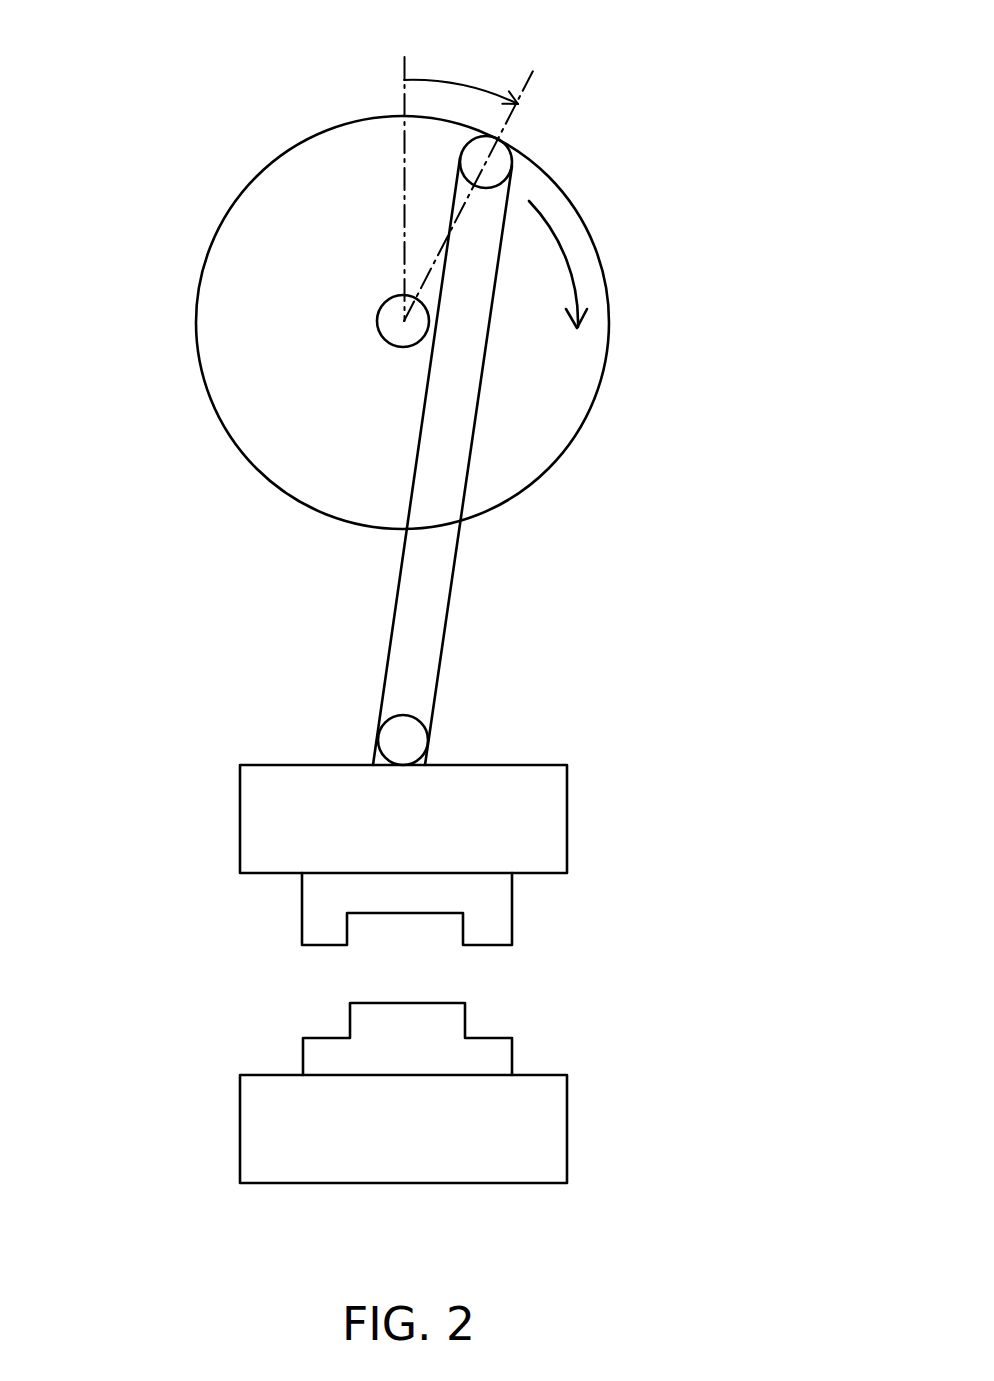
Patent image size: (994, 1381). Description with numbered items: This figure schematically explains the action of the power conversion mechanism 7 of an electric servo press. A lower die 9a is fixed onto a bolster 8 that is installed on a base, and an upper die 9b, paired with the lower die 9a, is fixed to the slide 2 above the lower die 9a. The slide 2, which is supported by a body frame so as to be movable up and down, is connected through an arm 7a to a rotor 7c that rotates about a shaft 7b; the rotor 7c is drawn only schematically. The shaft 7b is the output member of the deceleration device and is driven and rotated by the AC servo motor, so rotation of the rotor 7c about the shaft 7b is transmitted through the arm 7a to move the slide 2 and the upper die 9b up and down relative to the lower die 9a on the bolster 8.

The power conversion mechanism 7 is at (420, 382).
The arm 7a is at (438, 678).
The shaft 7b is at (377, 321).
The rotor 7c is at (255, 472).
The slide 2 is at (567, 820).
The upper die 9b is at (512, 932).
The lower die 9a is at (512, 1057).
The bolster 8 is at (567, 1137).